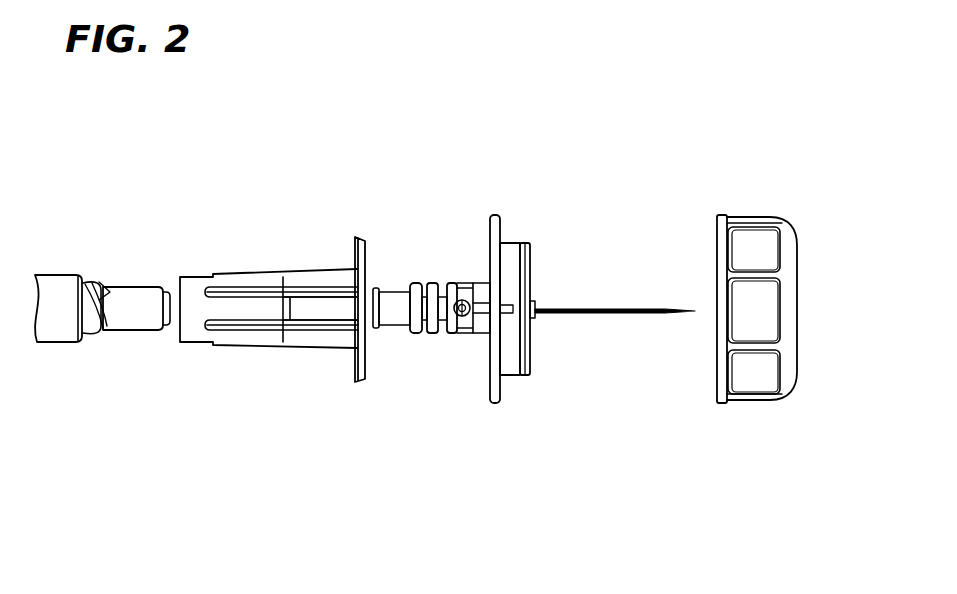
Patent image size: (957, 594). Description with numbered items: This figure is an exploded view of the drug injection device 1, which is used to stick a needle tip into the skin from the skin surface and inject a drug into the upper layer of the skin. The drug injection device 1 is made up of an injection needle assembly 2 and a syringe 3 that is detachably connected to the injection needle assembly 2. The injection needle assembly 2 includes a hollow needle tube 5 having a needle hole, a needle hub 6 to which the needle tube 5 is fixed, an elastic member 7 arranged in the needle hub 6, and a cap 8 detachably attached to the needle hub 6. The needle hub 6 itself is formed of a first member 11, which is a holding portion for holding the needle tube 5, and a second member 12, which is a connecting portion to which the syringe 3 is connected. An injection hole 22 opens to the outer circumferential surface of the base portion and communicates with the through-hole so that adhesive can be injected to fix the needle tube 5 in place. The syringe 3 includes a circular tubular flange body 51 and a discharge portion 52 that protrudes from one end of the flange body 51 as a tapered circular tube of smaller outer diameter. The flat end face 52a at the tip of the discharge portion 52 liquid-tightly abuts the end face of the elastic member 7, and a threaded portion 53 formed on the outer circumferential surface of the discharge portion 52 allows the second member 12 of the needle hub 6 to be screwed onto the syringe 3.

The drug injection device 1 is at (658, 163).
The injection needle assembly 2 is at (617, 402).
The syringe 3 is at (54, 249).
The needle tube 5 is at (600, 308).
The needle hub 6 is at (358, 400).
The elastic member 7 is at (393, 296).
The cap 8 is at (753, 237).
The first member 11 is at (510, 250).
The second member 12 is at (318, 290).
The injection hole 22 is at (466, 334).
The flange body 51 is at (62, 333).
The discharge portion 52 is at (133, 331).
The end face 52a is at (168, 317).
The threaded portion 53 is at (106, 320).